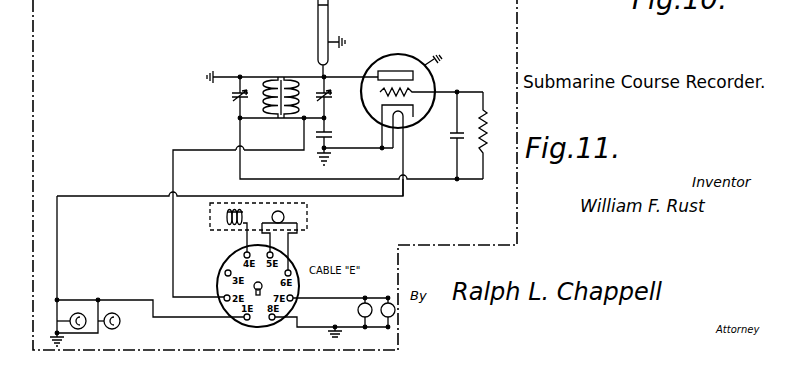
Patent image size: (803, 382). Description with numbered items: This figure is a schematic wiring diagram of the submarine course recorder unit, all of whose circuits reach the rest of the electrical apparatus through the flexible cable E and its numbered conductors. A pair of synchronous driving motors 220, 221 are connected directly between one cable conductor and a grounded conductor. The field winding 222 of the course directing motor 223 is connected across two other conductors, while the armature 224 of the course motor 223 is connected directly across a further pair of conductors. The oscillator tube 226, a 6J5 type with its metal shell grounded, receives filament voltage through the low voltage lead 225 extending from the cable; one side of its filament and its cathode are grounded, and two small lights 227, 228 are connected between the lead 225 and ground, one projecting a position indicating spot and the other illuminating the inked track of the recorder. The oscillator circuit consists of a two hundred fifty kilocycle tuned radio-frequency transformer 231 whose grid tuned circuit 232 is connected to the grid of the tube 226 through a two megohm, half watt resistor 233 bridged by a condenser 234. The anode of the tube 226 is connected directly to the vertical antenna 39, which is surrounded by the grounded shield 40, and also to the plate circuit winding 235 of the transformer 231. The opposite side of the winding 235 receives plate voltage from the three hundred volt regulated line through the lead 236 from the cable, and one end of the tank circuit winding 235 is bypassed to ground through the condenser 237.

The vertical antenna 39 is at (328, 8).
The grounded shield 40 is at (318, 28).
The tuned radio-frequency transformer 231 is at (283, 75).
The grid tuned circuit 232 is at (263, 108).
The plate circuit winding 235 is at (299, 92).
The lead 236 is at (183, 150).
The condenser 237 is at (333, 135).
The oscillator tube 226 is at (417, 55).
The resistor 233 is at (495, 135).
The condenser 234 is at (447, 135).
The low voltage lead 225 is at (386, 196).
The field winding 222 is at (227, 214).
The course directing motor 223 is at (214, 230).
The armature 224 is at (285, 215).
The synchronous driving motor 220 is at (357, 311).
The synchronous driving motor 221 is at (395, 312).
The small light 227 is at (78, 312).
The small light 228 is at (113, 329).